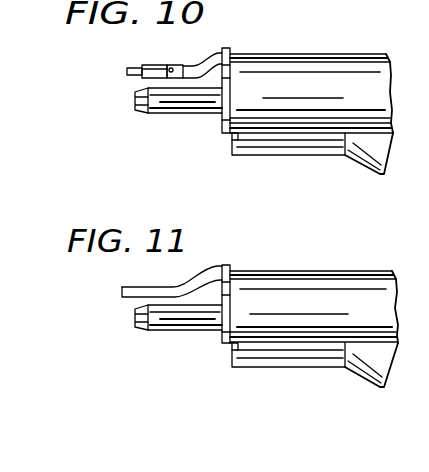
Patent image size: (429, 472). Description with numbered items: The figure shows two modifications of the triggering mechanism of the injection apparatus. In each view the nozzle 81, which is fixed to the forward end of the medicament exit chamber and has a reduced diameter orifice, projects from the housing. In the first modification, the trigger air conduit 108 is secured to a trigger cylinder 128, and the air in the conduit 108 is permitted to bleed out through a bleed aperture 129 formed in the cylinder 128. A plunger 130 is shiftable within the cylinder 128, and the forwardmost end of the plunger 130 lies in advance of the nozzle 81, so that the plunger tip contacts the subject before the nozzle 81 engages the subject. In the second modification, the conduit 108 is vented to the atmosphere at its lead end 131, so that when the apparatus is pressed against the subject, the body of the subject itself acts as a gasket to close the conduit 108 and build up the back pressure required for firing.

In FIG. 10, the nozzle 81 is at (137, 111).
In FIG. 11, the nozzle 81 is at (138, 328).
In FIG. 10, the trigger cylinder 128 is at (148, 66).
In FIG. 10, the bleed aperture 129 is at (175, 58).
In FIG. 10, the plunger 130 is at (128, 72).
In FIG. 10, the trigger air conduit 108 is at (207, 57).
In FIG. 11, the trigger air conduit 108 is at (335, 253).
In FIG. 11, the lead end 131 is at (157, 281).